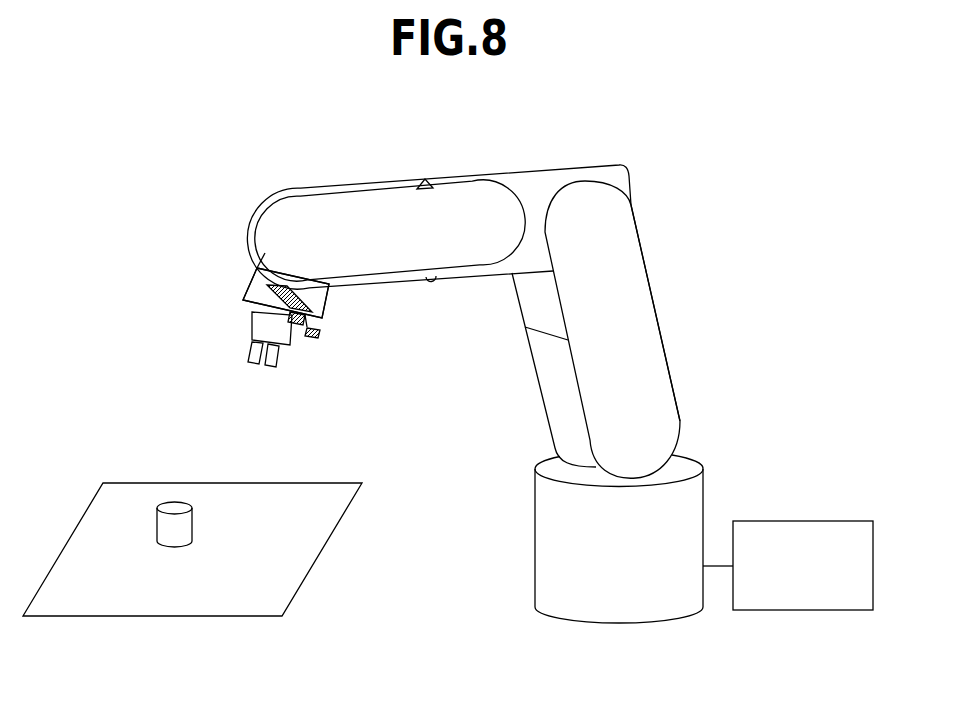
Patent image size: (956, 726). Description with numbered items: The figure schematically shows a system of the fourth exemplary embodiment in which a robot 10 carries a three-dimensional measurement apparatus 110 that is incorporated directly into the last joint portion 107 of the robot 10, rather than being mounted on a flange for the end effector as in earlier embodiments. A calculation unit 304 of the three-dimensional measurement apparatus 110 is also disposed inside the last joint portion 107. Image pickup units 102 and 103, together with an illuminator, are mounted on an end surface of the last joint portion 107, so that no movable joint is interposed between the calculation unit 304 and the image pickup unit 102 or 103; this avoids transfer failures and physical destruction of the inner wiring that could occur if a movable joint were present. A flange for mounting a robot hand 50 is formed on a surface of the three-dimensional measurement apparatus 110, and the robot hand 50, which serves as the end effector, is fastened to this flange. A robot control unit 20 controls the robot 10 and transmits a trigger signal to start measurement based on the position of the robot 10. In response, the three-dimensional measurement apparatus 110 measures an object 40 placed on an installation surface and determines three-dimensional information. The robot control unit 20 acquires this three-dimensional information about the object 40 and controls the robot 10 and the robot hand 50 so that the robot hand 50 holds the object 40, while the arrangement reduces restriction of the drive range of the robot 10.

The robot 10 is at (625, 287).
The robot control unit 20 is at (803, 535).
The object 40 is at (192, 528).
The robot hand 50 is at (248, 319).
The image pickup unit 102 is at (326, 332).
The image pickup unit 103 is at (328, 322).
The last joint portion 107 is at (256, 272).
The three-dimensional measurement apparatus 110 is at (258, 294).
The calculation unit 304 is at (330, 292).